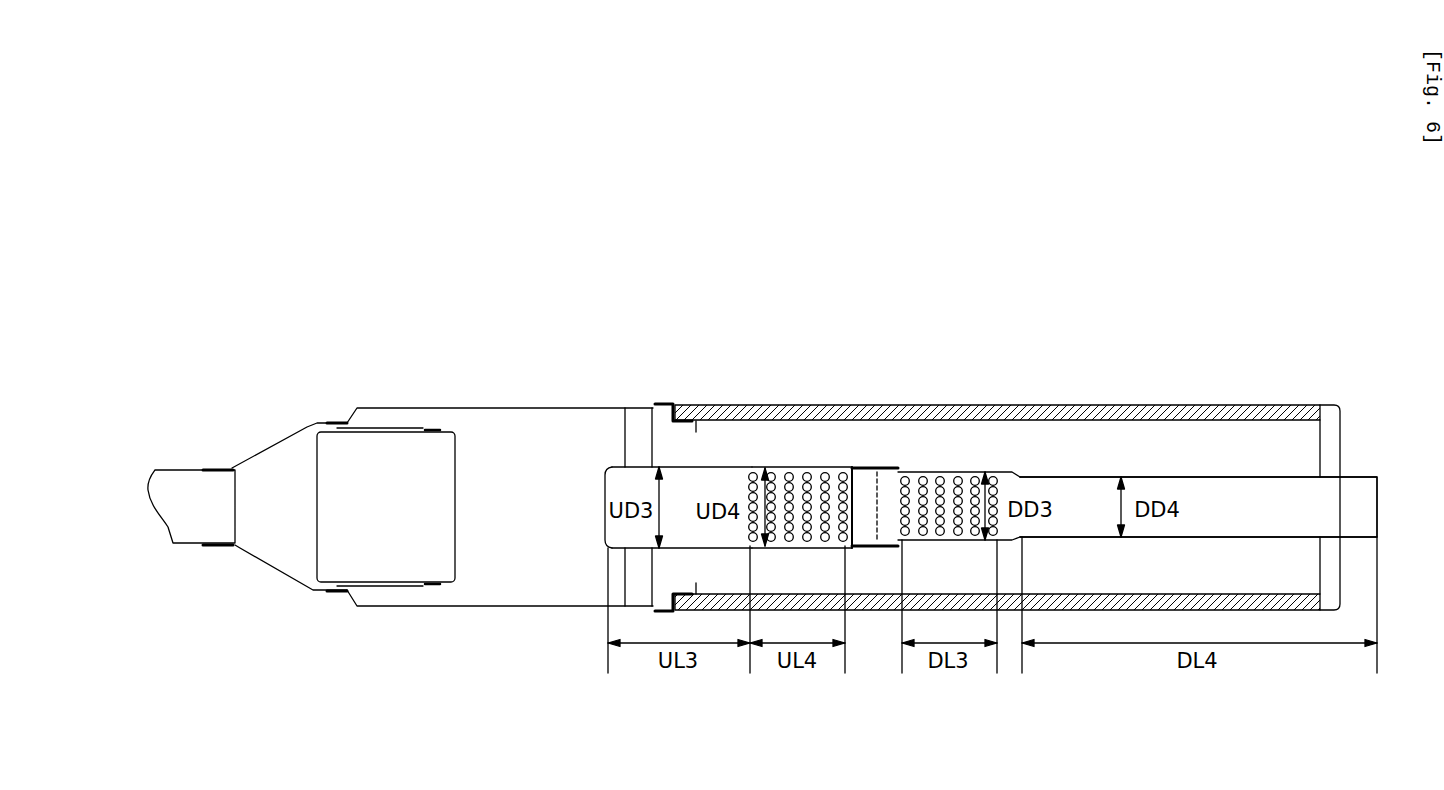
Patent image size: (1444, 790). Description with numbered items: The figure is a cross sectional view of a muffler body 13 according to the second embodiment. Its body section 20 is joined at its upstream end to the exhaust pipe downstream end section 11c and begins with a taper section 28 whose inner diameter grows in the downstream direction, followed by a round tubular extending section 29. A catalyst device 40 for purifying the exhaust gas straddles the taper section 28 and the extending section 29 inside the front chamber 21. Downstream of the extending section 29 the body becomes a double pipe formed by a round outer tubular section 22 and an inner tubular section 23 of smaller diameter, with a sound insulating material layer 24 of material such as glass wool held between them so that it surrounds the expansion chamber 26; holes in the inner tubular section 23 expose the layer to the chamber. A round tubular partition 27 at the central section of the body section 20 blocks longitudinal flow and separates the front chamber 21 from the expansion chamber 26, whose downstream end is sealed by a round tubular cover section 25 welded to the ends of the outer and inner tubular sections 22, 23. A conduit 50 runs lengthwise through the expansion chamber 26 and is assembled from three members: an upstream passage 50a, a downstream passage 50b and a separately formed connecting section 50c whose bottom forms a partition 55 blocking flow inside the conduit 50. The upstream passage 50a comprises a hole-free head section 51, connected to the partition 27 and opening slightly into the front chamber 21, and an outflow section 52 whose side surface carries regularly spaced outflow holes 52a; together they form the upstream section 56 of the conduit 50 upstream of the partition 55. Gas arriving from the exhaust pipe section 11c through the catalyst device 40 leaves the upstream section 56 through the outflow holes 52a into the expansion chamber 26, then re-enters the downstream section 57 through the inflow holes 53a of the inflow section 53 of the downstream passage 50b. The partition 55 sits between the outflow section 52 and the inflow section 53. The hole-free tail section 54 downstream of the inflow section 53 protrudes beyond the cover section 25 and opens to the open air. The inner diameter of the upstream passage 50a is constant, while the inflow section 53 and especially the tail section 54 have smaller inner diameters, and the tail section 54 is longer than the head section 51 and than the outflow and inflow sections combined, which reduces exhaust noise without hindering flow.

The exhaust pipe downstream end section 11c is at (192, 470).
The muffler body 13 is at (784, 172).
The body section 20 is at (473, 407).
The front chamber 21 is at (540, 463).
The outer tubular section 22 is at (705, 405).
The inner tubular section 23 is at (722, 405).
The sound insulating material layer 24 is at (718, 466).
The cover section 25 is at (1345, 443).
The expansion chamber 26 is at (1230, 455).
The partition 27 is at (623, 437).
The taper section 28 is at (272, 447).
The extending section 29 is at (430, 407).
The catalyst device 40 is at (393, 447).
The conduit 50 is at (1045, 250).
The upstream passage 50a is at (733, 465).
The downstream passage 50b is at (1157, 476).
The connecting section 50c is at (856, 508).
The head section 51 is at (757, 467).
The outflow section 52 is at (832, 466).
The outflow holes 52a is at (803, 466).
The inflow section 53 is at (937, 470).
The inflow holes 53a is at (997, 470).
The tail section 54 is at (1095, 476).
The partition 55 is at (883, 467).
The upstream section 56 is at (868, 297).
The downstream section 57 is at (962, 291).